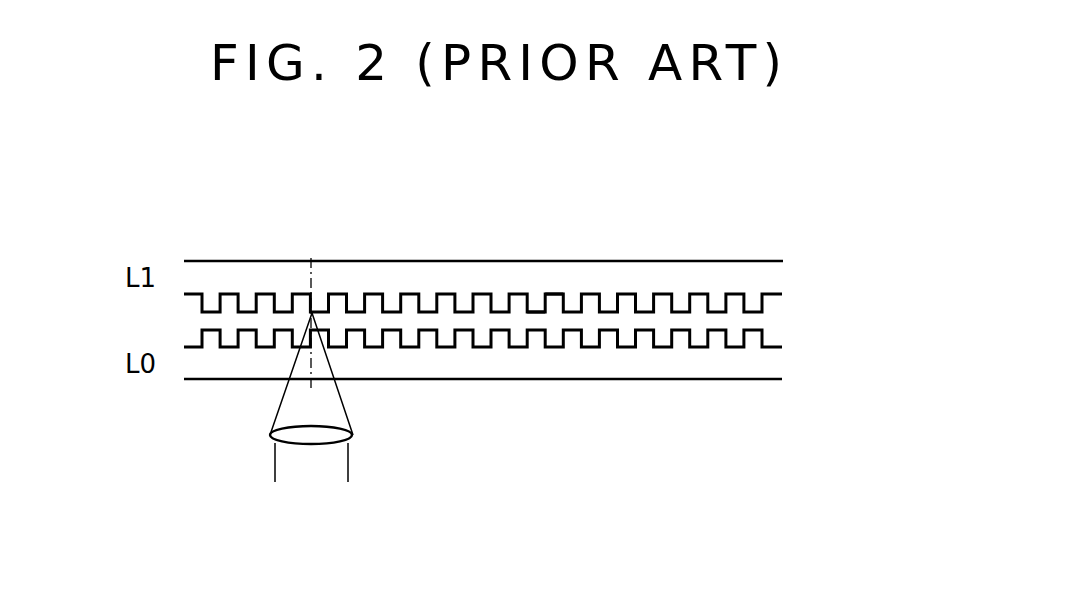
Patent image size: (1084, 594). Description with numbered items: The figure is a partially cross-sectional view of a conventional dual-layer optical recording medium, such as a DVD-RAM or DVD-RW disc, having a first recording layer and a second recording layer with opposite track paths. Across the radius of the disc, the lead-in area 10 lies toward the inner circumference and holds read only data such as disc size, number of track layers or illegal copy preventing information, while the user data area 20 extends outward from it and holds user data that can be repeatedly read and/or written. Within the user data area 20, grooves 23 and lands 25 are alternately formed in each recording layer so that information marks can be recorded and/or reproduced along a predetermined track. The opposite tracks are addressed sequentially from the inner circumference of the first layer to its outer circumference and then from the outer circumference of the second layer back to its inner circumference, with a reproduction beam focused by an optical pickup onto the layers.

The lead-in area 10 is at (184, 248).
The user data area 20 is at (775, 248).
The groove 23 is at (537, 313).
The land 25 is at (547, 293).